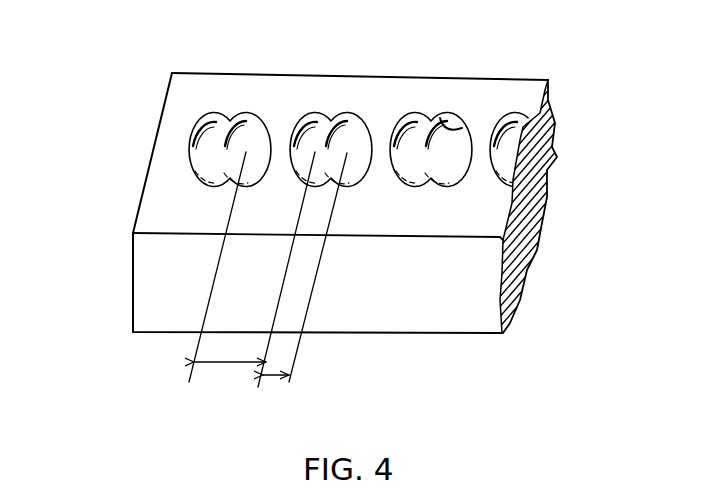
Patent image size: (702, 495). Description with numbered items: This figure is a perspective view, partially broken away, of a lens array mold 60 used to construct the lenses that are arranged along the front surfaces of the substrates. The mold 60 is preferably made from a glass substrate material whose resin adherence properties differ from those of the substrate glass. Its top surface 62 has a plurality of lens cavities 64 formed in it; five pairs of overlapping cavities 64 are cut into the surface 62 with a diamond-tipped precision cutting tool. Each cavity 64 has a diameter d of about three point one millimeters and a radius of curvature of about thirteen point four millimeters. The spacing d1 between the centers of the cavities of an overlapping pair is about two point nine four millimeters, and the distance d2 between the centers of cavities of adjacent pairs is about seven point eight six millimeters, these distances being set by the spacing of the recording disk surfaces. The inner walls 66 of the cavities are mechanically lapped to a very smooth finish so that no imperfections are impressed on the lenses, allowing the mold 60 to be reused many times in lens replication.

The lens array mold 60 is at (118, 190).
The top surface 62 is at (528, 80).
The lens cavities 64 is at (442, 172).
The inner walls 66 is at (447, 117).
The diameter d is at (412, 183).
The spacing between centers of cavities of an overlapping pair d1 is at (277, 376).
The distance between centers of cavities of adjacent pairs d2 is at (228, 363).